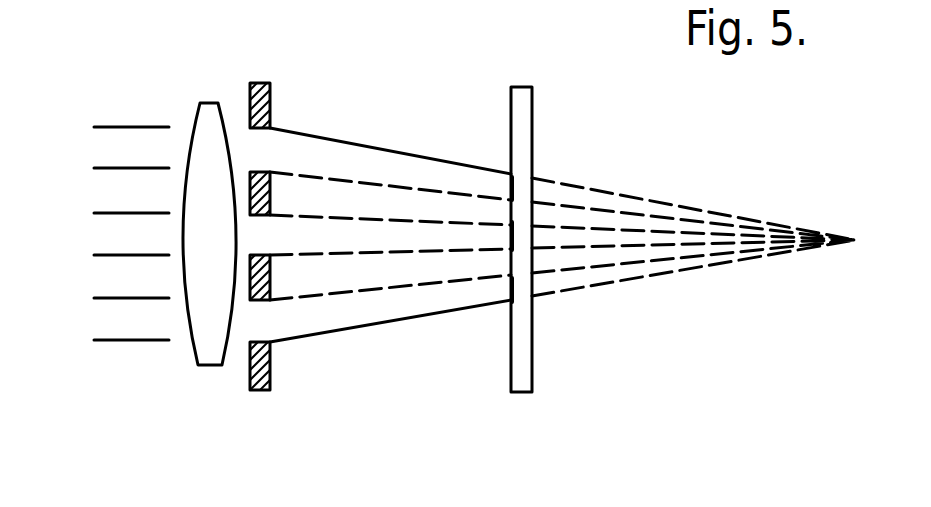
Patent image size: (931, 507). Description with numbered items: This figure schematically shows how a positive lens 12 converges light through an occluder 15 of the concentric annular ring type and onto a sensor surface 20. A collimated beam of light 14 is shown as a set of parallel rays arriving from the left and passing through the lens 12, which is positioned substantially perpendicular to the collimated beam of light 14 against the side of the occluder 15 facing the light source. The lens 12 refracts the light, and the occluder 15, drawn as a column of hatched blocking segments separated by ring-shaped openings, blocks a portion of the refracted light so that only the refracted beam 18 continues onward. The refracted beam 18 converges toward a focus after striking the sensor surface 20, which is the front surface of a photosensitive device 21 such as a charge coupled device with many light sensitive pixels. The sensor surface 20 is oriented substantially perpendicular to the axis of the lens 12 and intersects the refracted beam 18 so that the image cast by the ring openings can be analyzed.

The collimated beam of light 14 is at (122, 128).
The lens 12 is at (208, 103).
The occluder 15 is at (270, 177).
The refracted beam 18 is at (432, 158).
The photosensitive device 21 is at (521, 107).
The sensor surface 20 is at (510, 345).